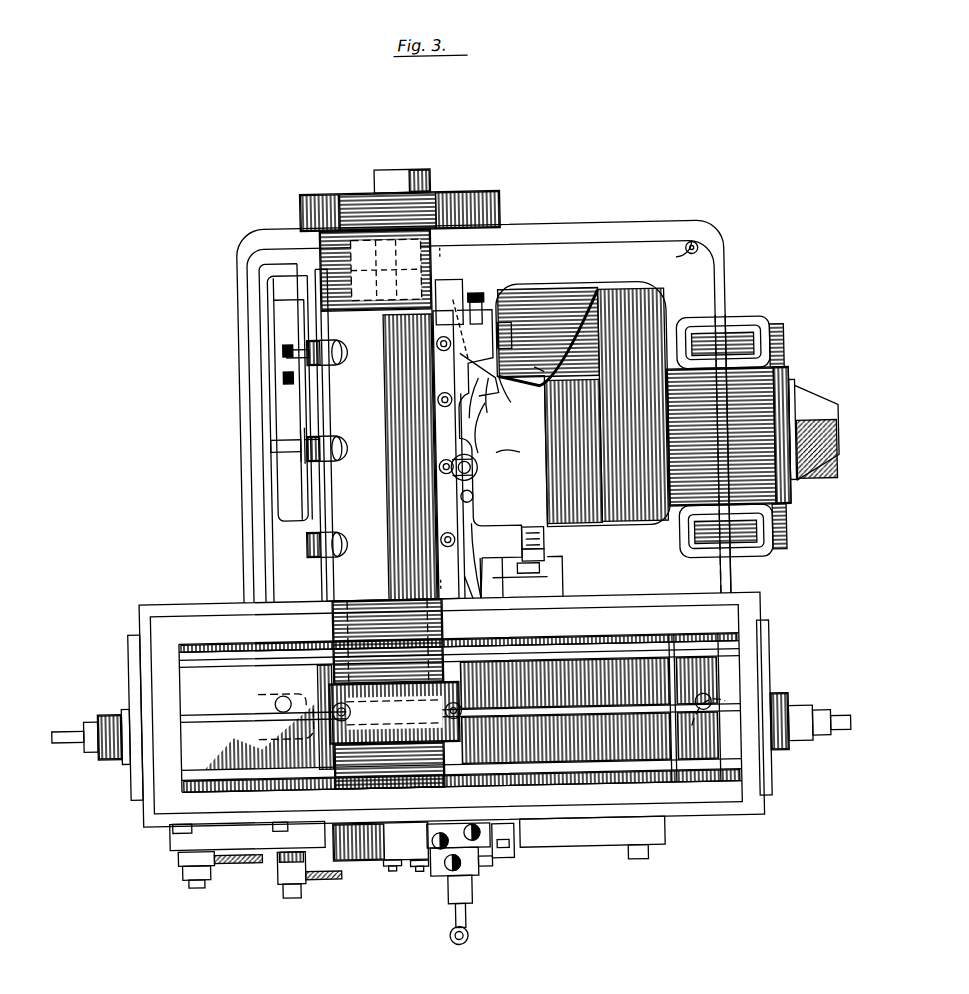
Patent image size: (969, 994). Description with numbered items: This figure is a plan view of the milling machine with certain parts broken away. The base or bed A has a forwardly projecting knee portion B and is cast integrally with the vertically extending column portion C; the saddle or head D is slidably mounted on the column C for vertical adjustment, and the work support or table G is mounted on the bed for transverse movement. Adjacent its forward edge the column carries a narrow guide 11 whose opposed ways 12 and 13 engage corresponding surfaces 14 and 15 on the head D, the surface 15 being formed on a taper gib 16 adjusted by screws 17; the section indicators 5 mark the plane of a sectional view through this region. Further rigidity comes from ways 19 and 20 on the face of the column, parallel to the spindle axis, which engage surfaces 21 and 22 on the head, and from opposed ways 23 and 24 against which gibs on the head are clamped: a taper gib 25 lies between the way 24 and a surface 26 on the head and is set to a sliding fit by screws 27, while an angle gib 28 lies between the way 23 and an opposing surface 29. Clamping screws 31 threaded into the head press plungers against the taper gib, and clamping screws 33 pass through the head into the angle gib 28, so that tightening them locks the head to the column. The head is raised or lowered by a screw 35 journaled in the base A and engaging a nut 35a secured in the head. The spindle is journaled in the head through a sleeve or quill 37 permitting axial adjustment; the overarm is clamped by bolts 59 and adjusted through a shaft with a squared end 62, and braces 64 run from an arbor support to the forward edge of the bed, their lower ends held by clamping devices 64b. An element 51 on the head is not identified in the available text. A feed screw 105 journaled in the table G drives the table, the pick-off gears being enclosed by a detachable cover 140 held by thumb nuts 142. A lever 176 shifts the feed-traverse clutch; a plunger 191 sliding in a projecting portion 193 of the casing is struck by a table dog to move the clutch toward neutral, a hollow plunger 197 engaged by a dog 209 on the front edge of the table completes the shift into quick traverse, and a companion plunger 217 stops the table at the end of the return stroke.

The base or bed A is at (714, 294).
The knee portion B is at (522, 584).
The column portion C is at (602, 300).
The saddle or head D is at (331, 488).
The work support or table G is at (591, 800).
The section line 5 is at (463, 258).
The narrow guide 11 is at (468, 588).
The way 12 is at (484, 553).
The way 13 is at (480, 520).
The surface 14 is at (488, 588).
The surface 15 is at (474, 496).
The taper gib 16 is at (472, 465).
The screws 17 is at (431, 492).
The way 19 is at (438, 600).
The way 20 is at (482, 426).
The surface 21 is at (437, 510).
The surface 22 is at (435, 372).
The way 23 is at (512, 588).
The way 24 is at (486, 398).
The taper gib 25 is at (492, 408).
The surface 26 is at (505, 390).
The screws 27 is at (546, 371).
The angle gib 28 is at (547, 554).
The surface 29 is at (547, 538).
The clamping screws 31 is at (486, 293).
The clamping screws 33 is at (542, 568).
The screw 35 is at (480, 467).
The nut 35a is at (537, 449).
The sleeve or quill 37 is at (451, 319).
The lever 51 is at (283, 442).
The clamping bolts 59 is at (344, 340).
The squared end 62 is at (293, 350).
The braces 64 is at (226, 858).
The clamping devices 64b is at (285, 896).
The feed screw 105 is at (72, 738).
The detachable cover 140 is at (352, 860).
The thumb nuts 142 is at (385, 869).
The lever 176 is at (460, 917).
The plunger 191 is at (419, 870).
The projecting portion 193 is at (504, 850).
The hollow plunger 197 is at (440, 870).
The dog 209 is at (495, 858).
The companion plunger 217 is at (478, 822).